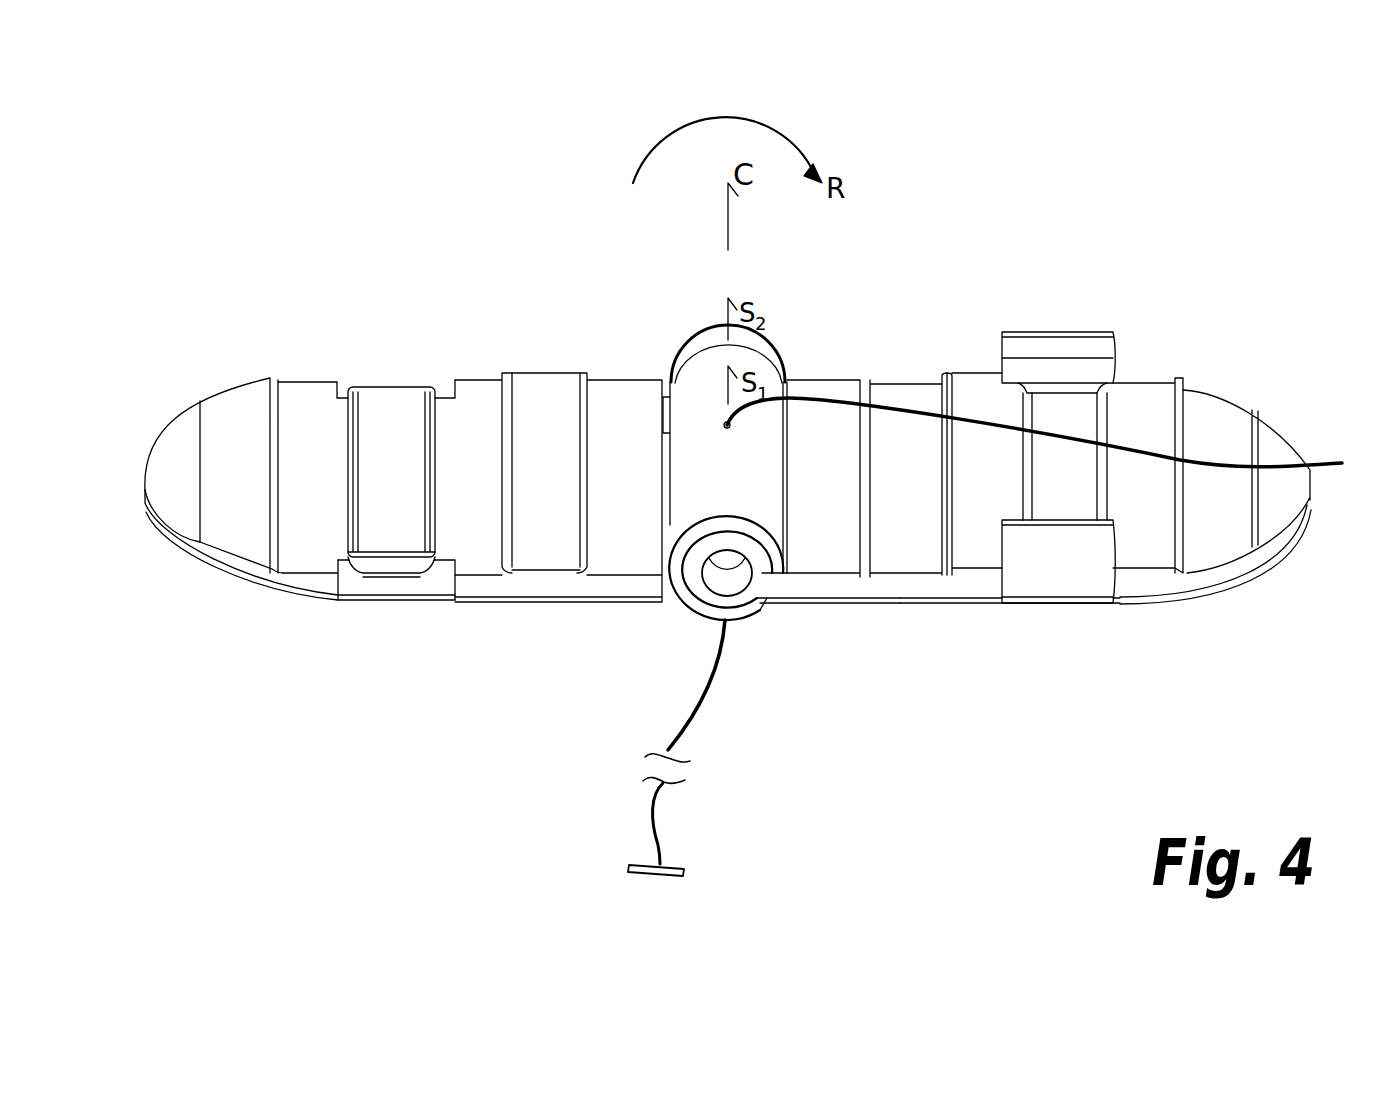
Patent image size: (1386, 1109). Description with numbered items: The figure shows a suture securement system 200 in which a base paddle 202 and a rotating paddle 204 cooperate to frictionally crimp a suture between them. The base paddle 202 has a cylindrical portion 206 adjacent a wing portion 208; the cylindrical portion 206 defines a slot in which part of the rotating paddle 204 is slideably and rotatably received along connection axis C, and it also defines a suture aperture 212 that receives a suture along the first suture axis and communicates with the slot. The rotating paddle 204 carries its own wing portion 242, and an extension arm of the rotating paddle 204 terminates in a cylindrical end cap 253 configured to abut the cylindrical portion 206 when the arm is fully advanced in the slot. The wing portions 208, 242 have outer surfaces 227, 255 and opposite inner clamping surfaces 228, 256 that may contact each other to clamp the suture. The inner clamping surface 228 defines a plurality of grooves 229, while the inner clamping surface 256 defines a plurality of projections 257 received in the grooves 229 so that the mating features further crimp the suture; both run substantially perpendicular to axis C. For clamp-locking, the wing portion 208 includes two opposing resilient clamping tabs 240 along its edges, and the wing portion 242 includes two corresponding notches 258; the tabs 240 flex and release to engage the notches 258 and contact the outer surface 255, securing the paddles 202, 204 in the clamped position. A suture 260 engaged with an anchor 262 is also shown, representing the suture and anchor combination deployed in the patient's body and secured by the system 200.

The suture securement system 200 is at (1093, 130).
The base paddle 202 is at (935, 605).
The rotating paddle 204 is at (290, 596).
The cylindrical portion 206 is at (758, 622).
The wing portion 208 is at (845, 604).
The suture aperture 212 is at (725, 425).
The outer surface 227 is at (1207, 600).
The inner clamping surface 228 is at (1141, 420).
The grooves 229 is at (1207, 410).
The resilient clamping tabs 240 is at (1063, 332).
The wing portion 242 is at (538, 372).
The cylindrical end cap 253 is at (712, 336).
The outer surface 255 is at (199, 576).
The inner clamping surface 256 is at (308, 408).
The projections 257 is at (236, 388).
The notches 258 is at (447, 386).
The suture 260 is at (664, 824).
The anchor 262 is at (686, 872).